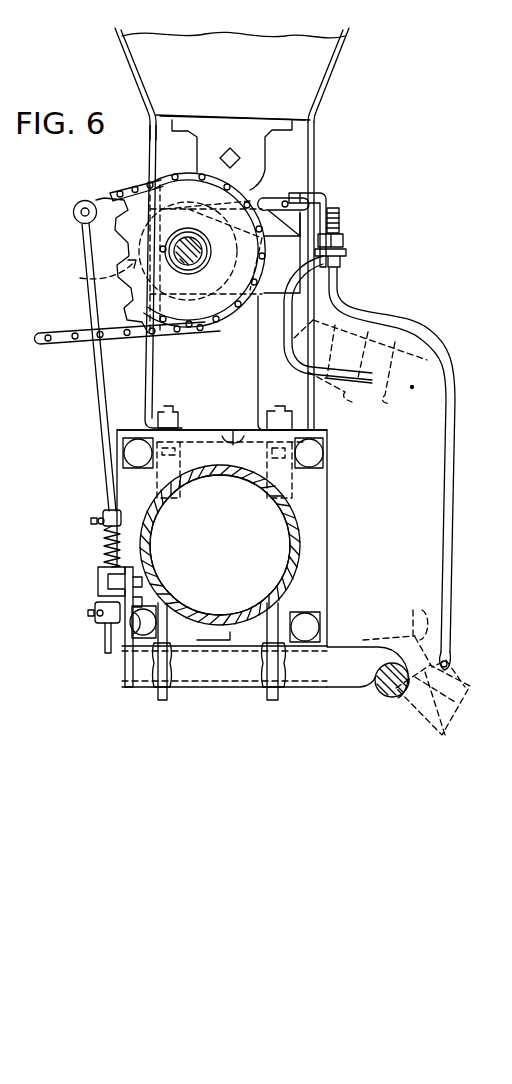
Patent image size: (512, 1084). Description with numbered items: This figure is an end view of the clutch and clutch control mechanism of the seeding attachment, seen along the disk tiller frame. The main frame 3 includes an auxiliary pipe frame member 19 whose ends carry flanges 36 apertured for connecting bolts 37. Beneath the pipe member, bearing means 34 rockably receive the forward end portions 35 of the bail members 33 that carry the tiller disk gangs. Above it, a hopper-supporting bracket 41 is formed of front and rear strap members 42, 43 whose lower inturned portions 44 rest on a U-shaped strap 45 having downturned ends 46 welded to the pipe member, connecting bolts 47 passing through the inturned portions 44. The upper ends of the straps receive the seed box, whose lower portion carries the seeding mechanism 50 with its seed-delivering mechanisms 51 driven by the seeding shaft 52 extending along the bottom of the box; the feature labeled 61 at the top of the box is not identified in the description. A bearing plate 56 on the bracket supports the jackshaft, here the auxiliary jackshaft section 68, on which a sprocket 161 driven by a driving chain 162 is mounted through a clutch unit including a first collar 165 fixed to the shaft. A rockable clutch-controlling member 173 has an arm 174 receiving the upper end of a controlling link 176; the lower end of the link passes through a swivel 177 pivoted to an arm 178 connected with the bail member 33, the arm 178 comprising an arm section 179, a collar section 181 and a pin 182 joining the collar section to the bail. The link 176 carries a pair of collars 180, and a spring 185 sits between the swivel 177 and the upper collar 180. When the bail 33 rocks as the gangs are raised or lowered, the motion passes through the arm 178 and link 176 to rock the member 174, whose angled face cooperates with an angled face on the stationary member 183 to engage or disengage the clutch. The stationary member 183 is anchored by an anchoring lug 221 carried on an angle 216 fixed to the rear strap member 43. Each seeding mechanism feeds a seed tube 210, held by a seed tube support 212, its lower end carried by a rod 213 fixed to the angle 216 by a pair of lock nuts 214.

The granular material 61 is at (267, 40).
The seed-delivering mechanism 51 is at (215, 137).
The seeding shaft 52 is at (237, 152).
The seeding mechanism 50 is at (185, 143).
The hopper-supporting bracket 41 is at (320, 140).
The stationary member 183 is at (269, 192).
The anchoring lug 221 is at (308, 193).
The angle 216 is at (340, 215).
The lock nuts 214 is at (341, 260).
The arm 174 is at (112, 207).
The first collar 165 is at (188, 231).
The clutch-controlling member 173 is at (94, 279).
The driving chain 162 is at (63, 338).
The auxiliary jackshaft section 68 is at (188, 271).
The bearing plate 56 is at (274, 286).
The sprocket 161 is at (215, 306).
The seed tube support 212 is at (323, 379).
The seed tube 210 is at (388, 395).
The rod 213 is at (447, 509).
The controlling link 176 is at (99, 371).
The front strap member 42 is at (147, 362).
The connecting bolts 47 is at (160, 411).
The lower inturned portions 44 is at (180, 424).
The strap 45 is at (243, 436).
The rear strap member 43 is at (312, 420).
The main frame 3 is at (333, 462).
The connecting bolts 37 is at (136, 452).
The downturned ends 46 is at (168, 482).
The auxiliary pipe frame member 19 is at (290, 536).
The flanges 36 is at (324, 543).
The arm section 179 is at (137, 605).
The collars 180 is at (110, 512).
The spring 185 is at (103, 540).
The swivel 177 is at (102, 567).
The arm 178 is at (104, 624).
The pin 182 is at (142, 640).
The collar section 181 is at (138, 670).
The bearing means 34 is at (162, 700).
The forward end portions 35 is at (222, 690).
The bail members 33 is at (360, 688).